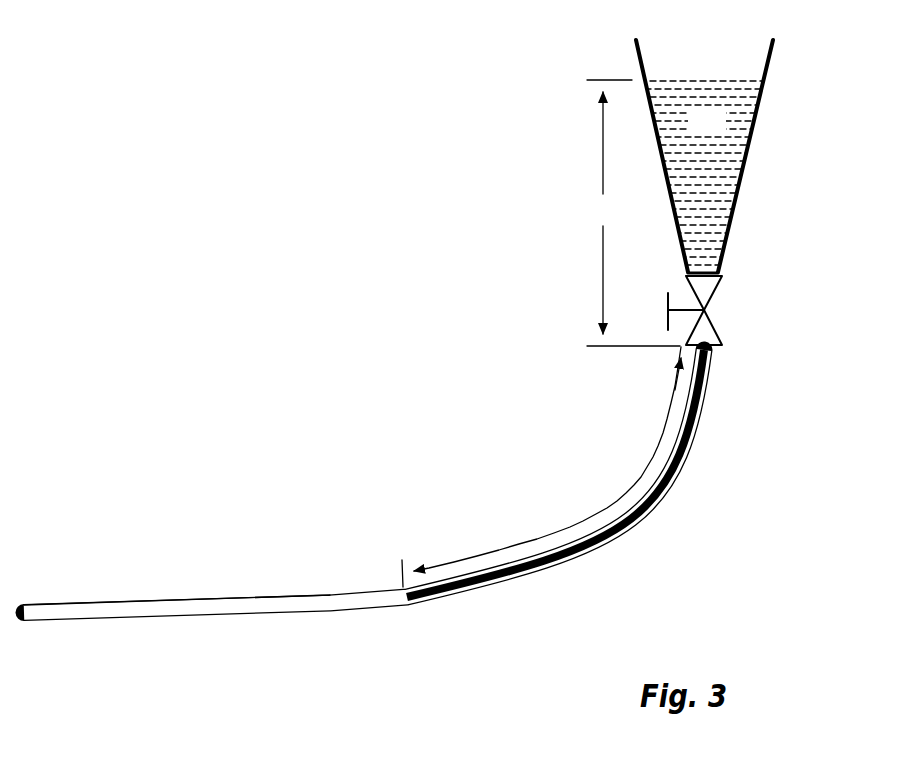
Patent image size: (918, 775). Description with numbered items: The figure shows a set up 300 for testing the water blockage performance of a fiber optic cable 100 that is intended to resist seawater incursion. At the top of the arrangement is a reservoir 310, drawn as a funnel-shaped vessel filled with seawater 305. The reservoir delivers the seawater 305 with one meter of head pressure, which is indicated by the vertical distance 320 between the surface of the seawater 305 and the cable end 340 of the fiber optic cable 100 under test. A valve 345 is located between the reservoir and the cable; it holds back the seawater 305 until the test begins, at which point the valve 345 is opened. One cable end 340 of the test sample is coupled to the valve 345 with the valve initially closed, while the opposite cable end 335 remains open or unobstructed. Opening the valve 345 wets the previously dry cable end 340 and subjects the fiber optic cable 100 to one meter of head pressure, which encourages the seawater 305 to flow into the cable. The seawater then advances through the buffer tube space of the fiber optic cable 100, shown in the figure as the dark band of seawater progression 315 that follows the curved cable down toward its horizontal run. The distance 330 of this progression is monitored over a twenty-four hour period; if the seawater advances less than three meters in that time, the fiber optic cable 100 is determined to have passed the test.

The set up 300 is at (312, 122).
The reservoir 310 is at (636, 48).
The seawater 305 is at (723, 131).
The vertical distance 320 is at (633, 213).
The valve 345 is at (746, 321).
The cable end 340 is at (728, 368).
The seawater progression 315 is at (693, 458).
The distance of progression 330 is at (637, 475).
The opposite cable end 335 is at (40, 580).
The fiber optic cable 100 is at (296, 560).